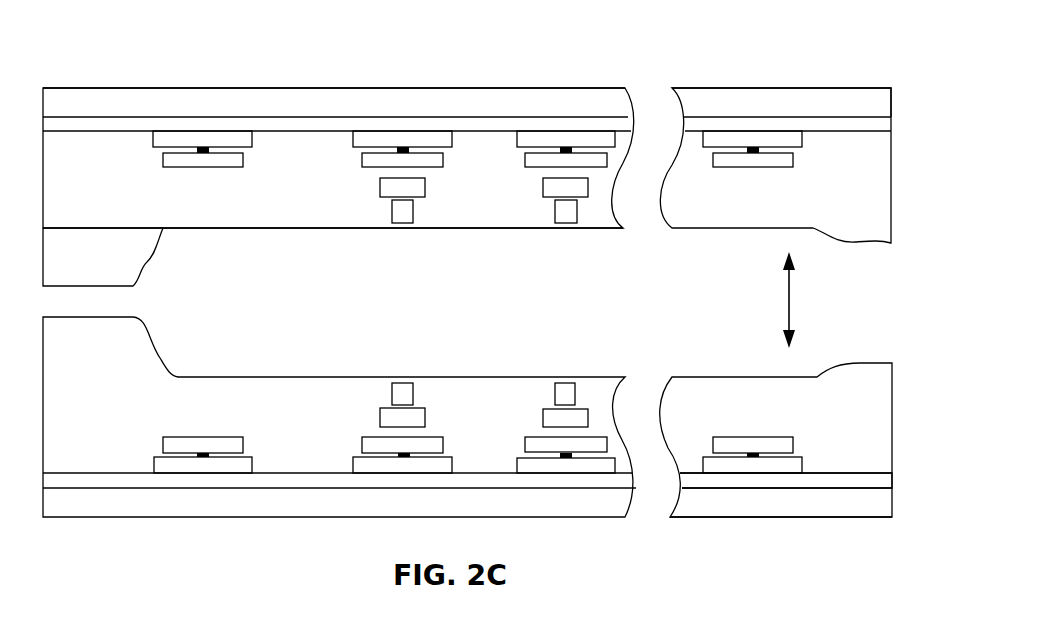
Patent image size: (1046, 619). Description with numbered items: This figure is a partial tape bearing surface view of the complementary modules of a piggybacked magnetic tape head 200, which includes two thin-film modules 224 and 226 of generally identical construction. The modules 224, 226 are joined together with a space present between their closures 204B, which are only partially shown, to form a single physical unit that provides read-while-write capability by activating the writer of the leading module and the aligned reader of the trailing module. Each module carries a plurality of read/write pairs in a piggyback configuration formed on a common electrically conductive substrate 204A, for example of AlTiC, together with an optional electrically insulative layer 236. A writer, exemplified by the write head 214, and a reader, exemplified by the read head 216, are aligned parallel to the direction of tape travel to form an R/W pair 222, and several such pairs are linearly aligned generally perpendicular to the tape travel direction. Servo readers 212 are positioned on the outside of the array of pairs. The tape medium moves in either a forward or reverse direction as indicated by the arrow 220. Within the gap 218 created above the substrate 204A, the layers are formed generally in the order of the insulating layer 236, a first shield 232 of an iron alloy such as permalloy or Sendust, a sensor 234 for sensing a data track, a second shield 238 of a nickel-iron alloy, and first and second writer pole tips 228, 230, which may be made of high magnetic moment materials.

The magnetic tape head 200 is at (386, 60).
The substrate 204A is at (334, 102).
The closure 204B is at (145, 262).
The servo reader 212 is at (251, 418).
The write head 214 is at (396, 381).
The read head 216 is at (386, 438).
The gap 218 is at (253, 230).
The arrow 220 is at (790, 304).
The R/W pair 222 is at (441, 387).
The thin-film module 224 is at (812, 88).
The thin-film module 226 is at (797, 518).
The first writer pole tip 228 is at (381, 420).
The second writer pole tip 230 is at (392, 392).
The first shield 232 is at (352, 464).
The sensor 234 is at (350, 447).
The insulating layer 236 is at (827, 475).
The second shield 238 is at (348, 445).